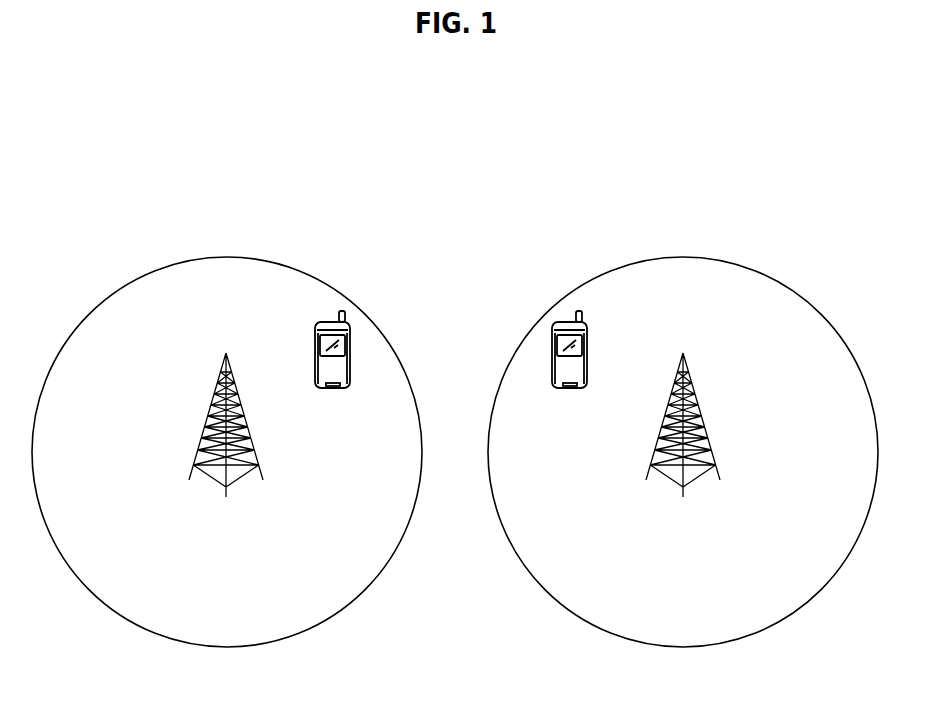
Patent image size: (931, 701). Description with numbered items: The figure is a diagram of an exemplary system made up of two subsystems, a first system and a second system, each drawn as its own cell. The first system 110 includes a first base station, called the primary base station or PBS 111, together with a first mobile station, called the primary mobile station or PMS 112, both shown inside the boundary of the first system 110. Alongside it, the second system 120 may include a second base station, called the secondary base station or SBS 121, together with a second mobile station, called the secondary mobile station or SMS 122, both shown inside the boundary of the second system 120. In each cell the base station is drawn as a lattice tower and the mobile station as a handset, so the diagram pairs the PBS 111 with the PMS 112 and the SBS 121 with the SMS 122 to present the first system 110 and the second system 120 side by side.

The first system 110 is at (224, 258).
The primary base station 111 is at (214, 414).
The primary mobile station 112 is at (315, 328).
The second system 120 is at (679, 258).
The secondary base station 121 is at (697, 424).
The secondary mobile station 122 is at (585, 332).